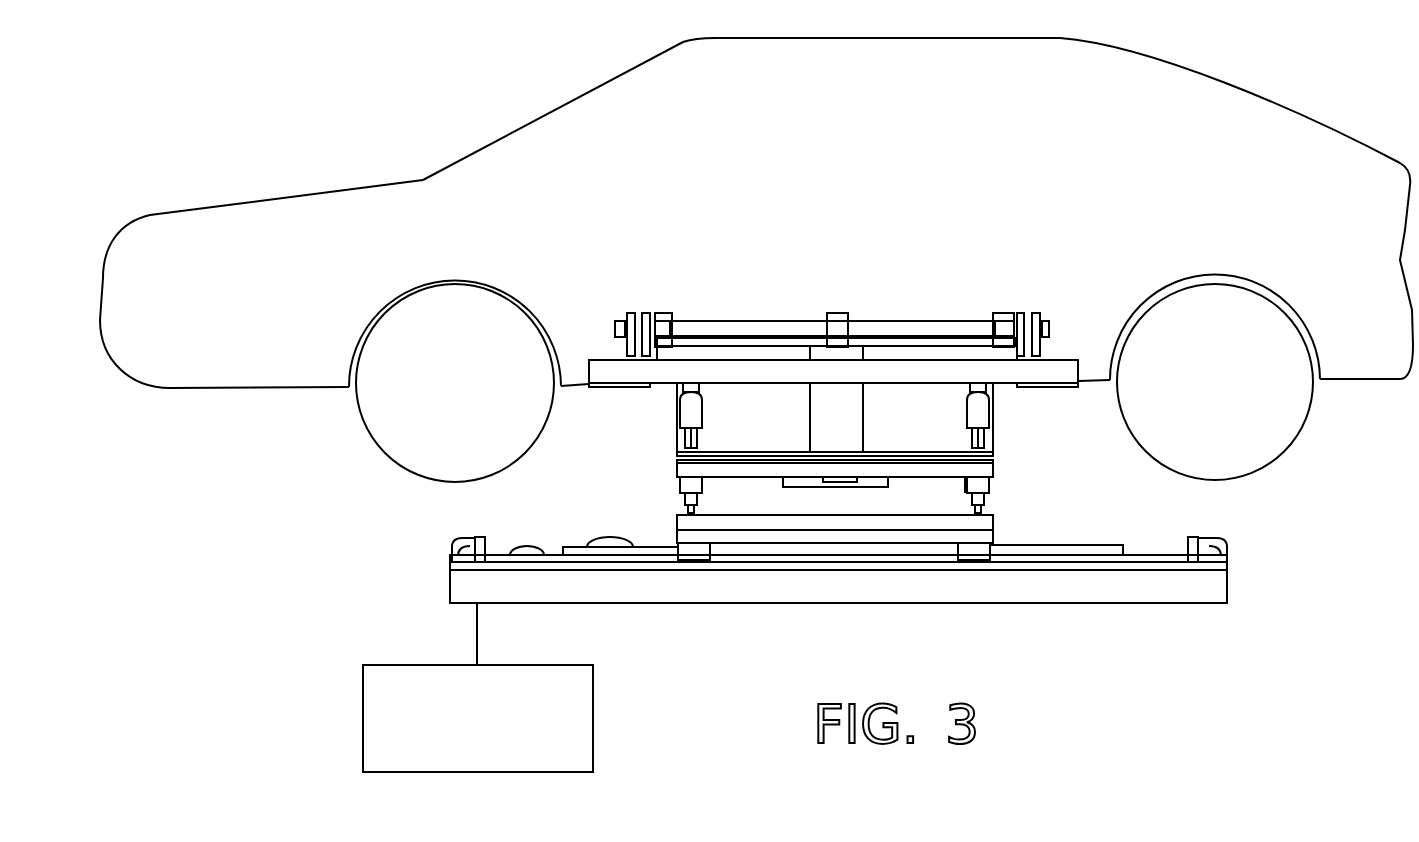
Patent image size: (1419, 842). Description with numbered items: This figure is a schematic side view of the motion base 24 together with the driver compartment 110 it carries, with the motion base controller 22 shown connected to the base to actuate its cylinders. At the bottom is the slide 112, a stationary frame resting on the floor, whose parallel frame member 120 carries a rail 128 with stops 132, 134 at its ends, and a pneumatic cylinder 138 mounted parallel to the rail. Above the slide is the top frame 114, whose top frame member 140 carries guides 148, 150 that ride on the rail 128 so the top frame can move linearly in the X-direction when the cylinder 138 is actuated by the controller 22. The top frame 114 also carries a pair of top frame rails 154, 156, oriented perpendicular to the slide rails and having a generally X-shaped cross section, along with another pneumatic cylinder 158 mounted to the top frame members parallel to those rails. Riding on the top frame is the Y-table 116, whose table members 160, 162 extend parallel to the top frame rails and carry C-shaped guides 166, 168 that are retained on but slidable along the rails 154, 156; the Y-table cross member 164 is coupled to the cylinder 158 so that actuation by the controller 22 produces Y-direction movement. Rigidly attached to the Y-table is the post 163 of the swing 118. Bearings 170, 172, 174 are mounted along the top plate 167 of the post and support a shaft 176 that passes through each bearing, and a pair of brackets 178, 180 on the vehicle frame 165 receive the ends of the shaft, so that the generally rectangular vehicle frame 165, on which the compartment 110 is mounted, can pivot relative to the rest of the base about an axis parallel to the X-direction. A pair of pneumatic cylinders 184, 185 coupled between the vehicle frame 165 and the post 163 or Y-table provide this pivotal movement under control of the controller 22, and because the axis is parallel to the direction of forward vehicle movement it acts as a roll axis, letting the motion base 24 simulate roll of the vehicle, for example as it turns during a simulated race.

The driver compartment 110 is at (525, 126).
The swing 118 is at (1092, 334).
The vehicle frame 165 is at (589, 373).
The top plate 167 is at (750, 340).
The shaft 176 is at (918, 321).
The bearing 170 is at (664, 313).
The bearing 172 is at (840, 313).
The bearing 174 is at (999, 313).
The bracket 178 is at (617, 321).
The bracket 180 is at (1042, 347).
The post 163 is at (930, 430).
The pneumatic cylinder 184 is at (681, 403).
The pneumatic cylinder 185 is at (990, 408).
The table member 160 is at (680, 454).
The Y-table cross member 164 is at (735, 468).
The table member 162 is at (997, 474).
The guide 166 is at (680, 485).
The guide 168 is at (967, 495).
The pneumatic cylinder 158 is at (852, 505).
The top frame rail 154 is at (677, 512).
The top frame rail 156 is at (985, 504).
The guide 148 is at (700, 556).
The guide 150 is at (983, 555).
The top frame 114 is at (1055, 530).
The slide 112 is at (538, 535).
The frame member 120 is at (940, 585).
The pneumatic cylinder 138 is at (633, 543).
The rail 128 is at (545, 556).
The top frame member 140 is at (850, 533).
The stop 132 is at (455, 545).
The stop 134 is at (1205, 545).
The Y-table 116 is at (592, 490).
The motion base 24 is at (795, 622).
The motion base controller 22 is at (418, 665).